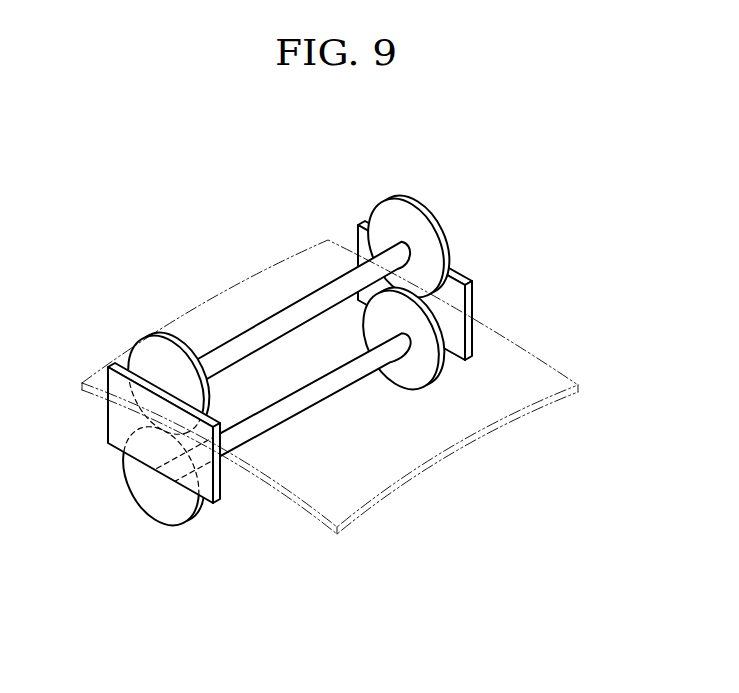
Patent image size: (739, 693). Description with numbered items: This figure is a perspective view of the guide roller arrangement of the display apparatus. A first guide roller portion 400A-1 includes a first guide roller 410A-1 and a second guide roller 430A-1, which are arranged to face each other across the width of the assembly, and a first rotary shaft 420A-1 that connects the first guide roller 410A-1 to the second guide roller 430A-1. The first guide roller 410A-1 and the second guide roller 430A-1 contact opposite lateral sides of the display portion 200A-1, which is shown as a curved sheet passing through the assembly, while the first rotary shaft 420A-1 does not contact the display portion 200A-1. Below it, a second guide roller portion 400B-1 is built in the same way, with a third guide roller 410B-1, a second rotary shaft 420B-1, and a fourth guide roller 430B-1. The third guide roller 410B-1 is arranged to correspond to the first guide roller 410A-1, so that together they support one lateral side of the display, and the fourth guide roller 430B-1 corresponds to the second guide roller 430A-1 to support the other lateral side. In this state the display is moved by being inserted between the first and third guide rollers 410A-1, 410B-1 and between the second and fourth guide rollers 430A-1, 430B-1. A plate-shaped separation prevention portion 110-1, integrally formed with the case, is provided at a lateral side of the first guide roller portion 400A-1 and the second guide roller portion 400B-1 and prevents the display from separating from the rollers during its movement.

The separation prevention portion 110-1 is at (118, 445).
The display portion 200A-1 is at (537, 365).
The first guide roller portion 400A-1 is at (283, 285).
The first guide roller 410A-1 is at (163, 307).
The first rotary shaft 420A-1 is at (288, 310).
The second guide roller 430A-1 is at (375, 220).
The second guide roller portion 400B-1 is at (297, 448).
The third guide roller 410B-1 is at (215, 493).
The second rotary shaft 420B-1 is at (303, 407).
The fourth guide roller 430B-1 is at (426, 378).